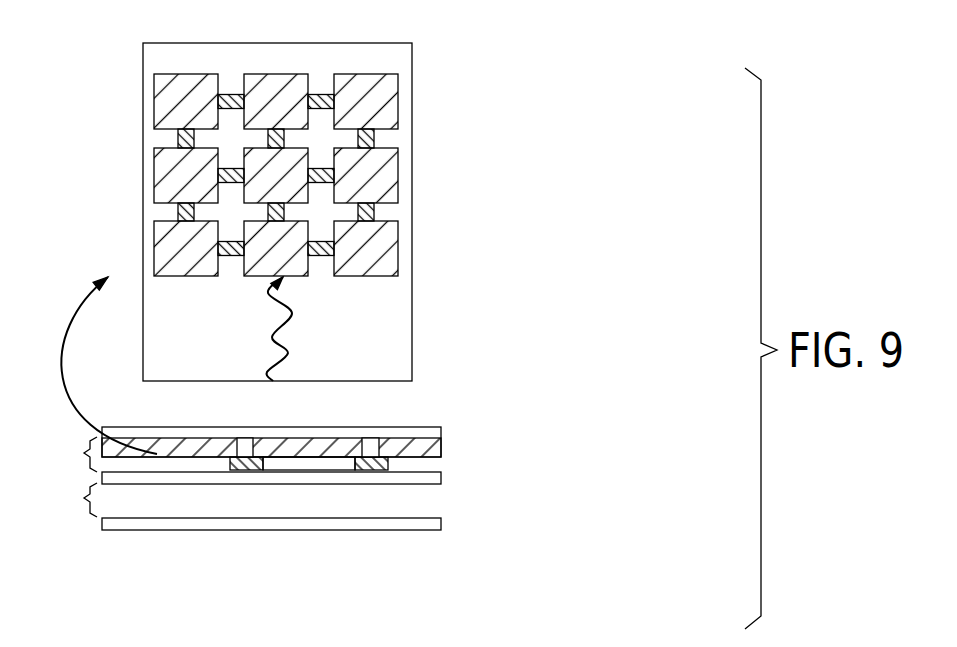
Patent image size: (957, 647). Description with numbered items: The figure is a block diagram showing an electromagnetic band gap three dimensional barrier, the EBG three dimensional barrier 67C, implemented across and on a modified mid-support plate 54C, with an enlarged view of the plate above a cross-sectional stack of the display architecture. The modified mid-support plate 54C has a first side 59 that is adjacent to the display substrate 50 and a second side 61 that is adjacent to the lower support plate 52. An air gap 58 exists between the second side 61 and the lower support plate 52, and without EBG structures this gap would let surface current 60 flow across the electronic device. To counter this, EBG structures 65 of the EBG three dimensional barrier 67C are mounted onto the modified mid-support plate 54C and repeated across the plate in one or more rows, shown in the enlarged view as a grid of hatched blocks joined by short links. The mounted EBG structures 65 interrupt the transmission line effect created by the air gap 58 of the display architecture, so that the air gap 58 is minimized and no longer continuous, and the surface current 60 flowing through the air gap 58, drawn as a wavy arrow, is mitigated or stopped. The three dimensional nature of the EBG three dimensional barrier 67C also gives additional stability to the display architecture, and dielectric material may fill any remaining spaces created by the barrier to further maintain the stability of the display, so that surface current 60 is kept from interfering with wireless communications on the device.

The display substrate 50 is at (411, 427).
The lower support plate 52 is at (411, 530).
The modified mid-support plate 54C is at (355, 43).
The air gap 58 is at (84, 453).
The first side 59 is at (298, 470).
The surface current 60 is at (277, 332).
The second side 61 is at (288, 484).
The EBG structure 65 is at (363, 253).
The EBG 3D barrier 67C is at (227, 207).